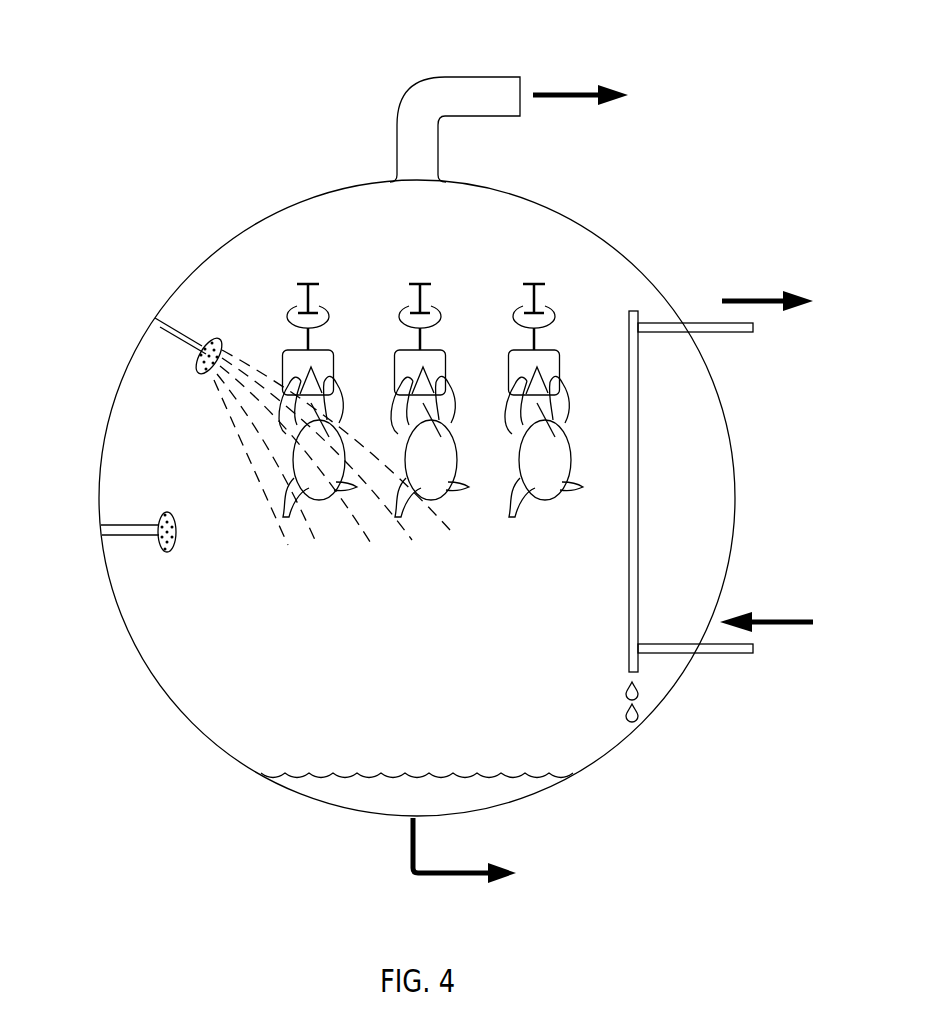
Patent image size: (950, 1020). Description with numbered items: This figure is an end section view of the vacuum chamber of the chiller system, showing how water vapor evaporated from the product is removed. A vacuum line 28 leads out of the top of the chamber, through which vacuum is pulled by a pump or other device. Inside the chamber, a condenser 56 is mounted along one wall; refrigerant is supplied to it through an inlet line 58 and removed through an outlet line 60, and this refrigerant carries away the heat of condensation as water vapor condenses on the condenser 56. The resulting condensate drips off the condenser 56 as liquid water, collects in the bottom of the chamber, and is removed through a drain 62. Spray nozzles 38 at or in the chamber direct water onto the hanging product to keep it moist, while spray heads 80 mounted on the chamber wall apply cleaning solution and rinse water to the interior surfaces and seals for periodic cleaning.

The vacuum line 28 is at (478, 76).
The spray nozzles 38 is at (160, 348).
The condenser 56 is at (660, 456).
The inlet line 58 is at (715, 654).
The outlet line 60 is at (697, 322).
The drain 62 is at (450, 882).
The spray heads 80 is at (128, 545).